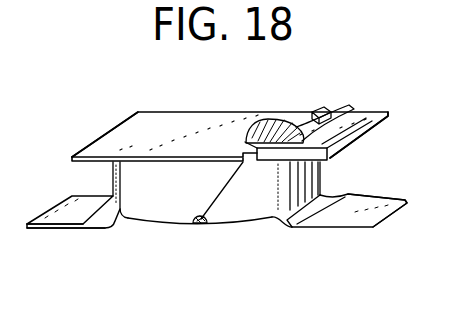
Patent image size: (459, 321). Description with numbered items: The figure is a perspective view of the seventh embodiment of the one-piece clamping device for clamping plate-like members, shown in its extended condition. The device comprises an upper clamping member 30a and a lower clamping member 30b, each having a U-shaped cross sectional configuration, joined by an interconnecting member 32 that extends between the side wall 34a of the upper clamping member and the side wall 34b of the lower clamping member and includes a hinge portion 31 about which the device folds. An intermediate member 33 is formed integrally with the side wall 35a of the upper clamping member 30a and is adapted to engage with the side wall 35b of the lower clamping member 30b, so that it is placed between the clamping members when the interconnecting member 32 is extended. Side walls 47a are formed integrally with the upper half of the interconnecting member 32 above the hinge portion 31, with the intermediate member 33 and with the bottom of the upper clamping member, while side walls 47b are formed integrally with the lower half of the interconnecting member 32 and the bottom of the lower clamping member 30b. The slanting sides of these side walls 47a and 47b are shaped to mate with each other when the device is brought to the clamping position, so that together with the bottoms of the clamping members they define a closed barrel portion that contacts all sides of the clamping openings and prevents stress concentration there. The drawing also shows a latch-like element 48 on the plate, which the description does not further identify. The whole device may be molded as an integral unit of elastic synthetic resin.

The intermediate member 33 is at (240, 117).
The side wall of the upper clamping member 35a is at (107, 128).
The side wall of the lower clamping member 35b is at (364, 133).
The latch tongue 48 is at (347, 104).
The hinge portion 31 is at (147, 208).
The side wall of the upper clamping member 34a is at (49, 208).
The upper clamping member 30a is at (68, 219).
The side walls of the upper half of the interconnecting member 47a is at (188, 197).
The interconnecting member 32 is at (198, 230).
The side walls of the lower half of the interconnecting member 47b is at (262, 210).
The lower clamping member 30b is at (345, 218).
The side wall of the lower clamping member 34b is at (388, 193).